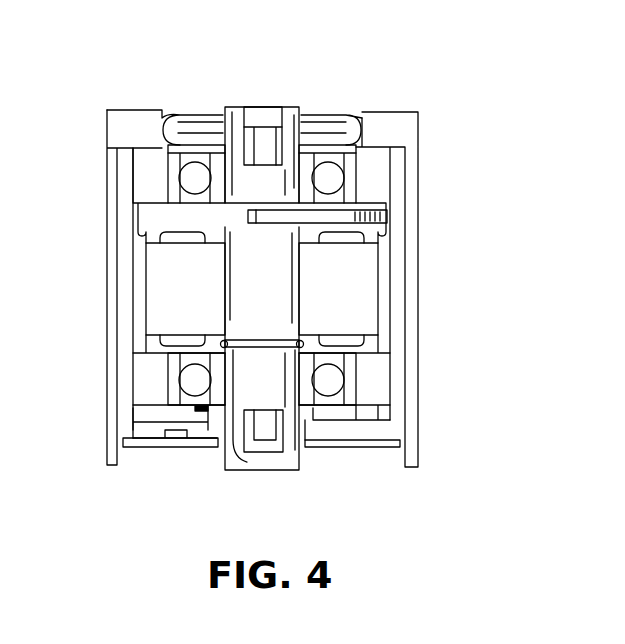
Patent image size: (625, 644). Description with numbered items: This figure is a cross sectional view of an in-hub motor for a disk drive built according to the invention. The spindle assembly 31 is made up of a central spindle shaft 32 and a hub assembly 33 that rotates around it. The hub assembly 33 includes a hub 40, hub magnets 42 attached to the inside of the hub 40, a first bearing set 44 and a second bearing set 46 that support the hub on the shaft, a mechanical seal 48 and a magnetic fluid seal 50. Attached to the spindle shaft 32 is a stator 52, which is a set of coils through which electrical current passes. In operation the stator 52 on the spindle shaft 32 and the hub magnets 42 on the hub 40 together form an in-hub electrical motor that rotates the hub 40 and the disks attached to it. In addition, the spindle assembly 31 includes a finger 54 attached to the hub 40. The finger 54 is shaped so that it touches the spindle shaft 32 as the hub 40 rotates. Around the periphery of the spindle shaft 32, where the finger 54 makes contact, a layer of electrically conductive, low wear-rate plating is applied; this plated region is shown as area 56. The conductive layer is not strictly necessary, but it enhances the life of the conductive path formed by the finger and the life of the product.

The spindle assembly 31 is at (443, 143).
The spindle shaft 32 is at (289, 112).
The hub assembly 33 is at (123, 110).
The hub 40 is at (412, 372).
The hub magnets 42 is at (380, 316).
The first bearing set 44 is at (172, 158).
The second bearing set 46 is at (176, 393).
The mechanical seal 48 is at (343, 413).
The magnetic fluid seal 50 is at (330, 122).
The stator 52 is at (170, 292).
The finger 54 is at (347, 224).
The area of conductive plating 56 is at (235, 224).